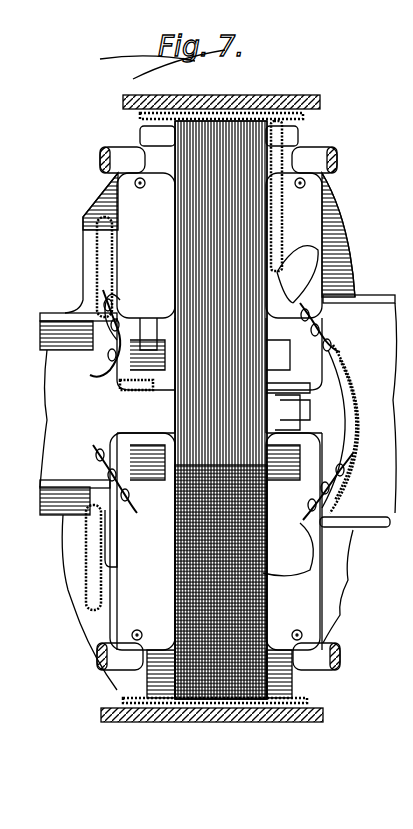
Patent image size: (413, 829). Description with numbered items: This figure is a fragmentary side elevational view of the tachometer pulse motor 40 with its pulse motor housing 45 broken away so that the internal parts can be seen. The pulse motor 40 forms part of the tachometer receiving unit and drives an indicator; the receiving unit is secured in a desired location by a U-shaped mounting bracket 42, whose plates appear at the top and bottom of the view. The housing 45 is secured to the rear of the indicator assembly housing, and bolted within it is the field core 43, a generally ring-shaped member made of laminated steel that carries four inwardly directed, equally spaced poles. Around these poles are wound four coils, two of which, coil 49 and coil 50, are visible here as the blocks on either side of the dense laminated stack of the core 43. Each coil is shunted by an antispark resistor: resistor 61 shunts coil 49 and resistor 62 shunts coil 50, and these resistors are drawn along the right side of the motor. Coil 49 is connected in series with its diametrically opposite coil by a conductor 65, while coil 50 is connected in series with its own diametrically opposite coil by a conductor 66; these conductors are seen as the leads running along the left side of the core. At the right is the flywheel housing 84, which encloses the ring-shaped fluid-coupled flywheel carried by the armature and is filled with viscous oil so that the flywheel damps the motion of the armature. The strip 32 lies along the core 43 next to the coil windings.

The pulse motor 40 is at (178, 728).
The U-shaped mounting bracket 42 is at (270, 96).
The field core 43 is at (264, 610).
The housing 45 is at (300, 118).
The stitched edge strip 32 is at (283, 210).
The coil 49 is at (130, 600).
The coil 50 is at (313, 228).
The antispark resistor 61 is at (303, 437).
The antispark resistor 62 is at (313, 384).
The conductor 65 is at (92, 602).
The conductor 66 is at (95, 252).
The flywheel housing 84 is at (370, 300).